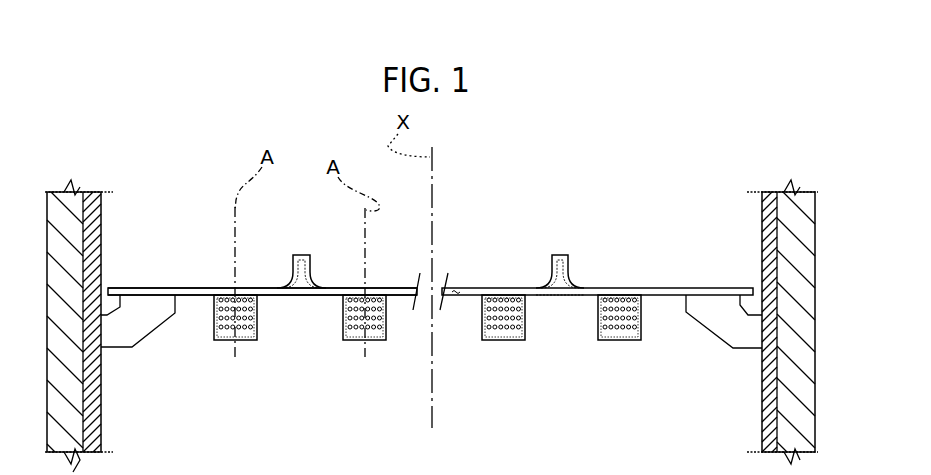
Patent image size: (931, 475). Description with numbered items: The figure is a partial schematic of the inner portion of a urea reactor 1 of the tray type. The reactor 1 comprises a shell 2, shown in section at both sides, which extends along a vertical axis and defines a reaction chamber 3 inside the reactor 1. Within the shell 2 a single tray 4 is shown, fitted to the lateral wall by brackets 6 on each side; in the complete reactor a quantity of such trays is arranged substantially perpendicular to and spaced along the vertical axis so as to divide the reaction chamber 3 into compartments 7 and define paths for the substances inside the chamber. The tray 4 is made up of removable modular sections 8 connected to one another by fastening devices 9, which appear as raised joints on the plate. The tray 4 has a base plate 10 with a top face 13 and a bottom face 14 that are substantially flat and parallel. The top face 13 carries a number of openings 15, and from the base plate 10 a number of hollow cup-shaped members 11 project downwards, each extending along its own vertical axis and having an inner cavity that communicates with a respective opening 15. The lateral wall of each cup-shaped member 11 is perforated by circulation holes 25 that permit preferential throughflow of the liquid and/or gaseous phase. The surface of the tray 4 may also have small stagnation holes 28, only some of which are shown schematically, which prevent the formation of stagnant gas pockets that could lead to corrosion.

The urea reactor 1 is at (198, 152).
The shell 2 is at (780, 232).
The reaction chamber 3 is at (658, 243).
The tray 4 is at (660, 296).
The bracket 6 is at (128, 335).
The compartment 7 is at (153, 241).
The removable modular section 8 is at (555, 297).
The fastening device 9 is at (551, 263).
The base plate 10 is at (317, 293).
The cup-shaped member 11 is at (387, 318).
The top face 13 is at (191, 280).
The bottom face 14 is at (189, 305).
The opening 15 is at (250, 288).
The circulation hole 25 is at (248, 318).
The stagnation hole 28 is at (453, 290).